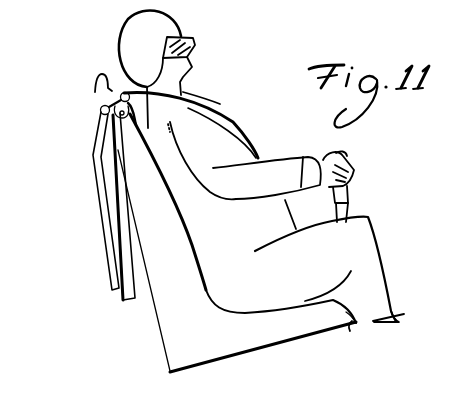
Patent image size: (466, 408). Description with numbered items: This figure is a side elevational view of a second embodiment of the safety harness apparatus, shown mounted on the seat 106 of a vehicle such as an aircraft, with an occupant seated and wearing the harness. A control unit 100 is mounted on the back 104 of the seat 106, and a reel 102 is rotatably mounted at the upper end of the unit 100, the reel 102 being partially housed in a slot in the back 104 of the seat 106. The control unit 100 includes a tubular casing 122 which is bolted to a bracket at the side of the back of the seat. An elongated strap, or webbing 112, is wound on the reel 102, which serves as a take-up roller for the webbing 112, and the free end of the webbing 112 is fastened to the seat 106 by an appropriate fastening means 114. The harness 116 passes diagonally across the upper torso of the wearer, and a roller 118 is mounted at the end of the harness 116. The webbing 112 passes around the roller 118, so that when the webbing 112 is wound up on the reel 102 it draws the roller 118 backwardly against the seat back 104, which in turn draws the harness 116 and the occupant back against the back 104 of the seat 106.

The control unit 100 is at (77, 163).
The reel 102 is at (101, 111).
The back 104 is at (160, 331).
The seat 106 is at (256, 336).
The webbing 112 is at (120, 98).
The fastening means 114 is at (132, 116).
The harness 116 is at (215, 105).
The roller 118 is at (123, 90).
The tubular casing 122 is at (110, 221).